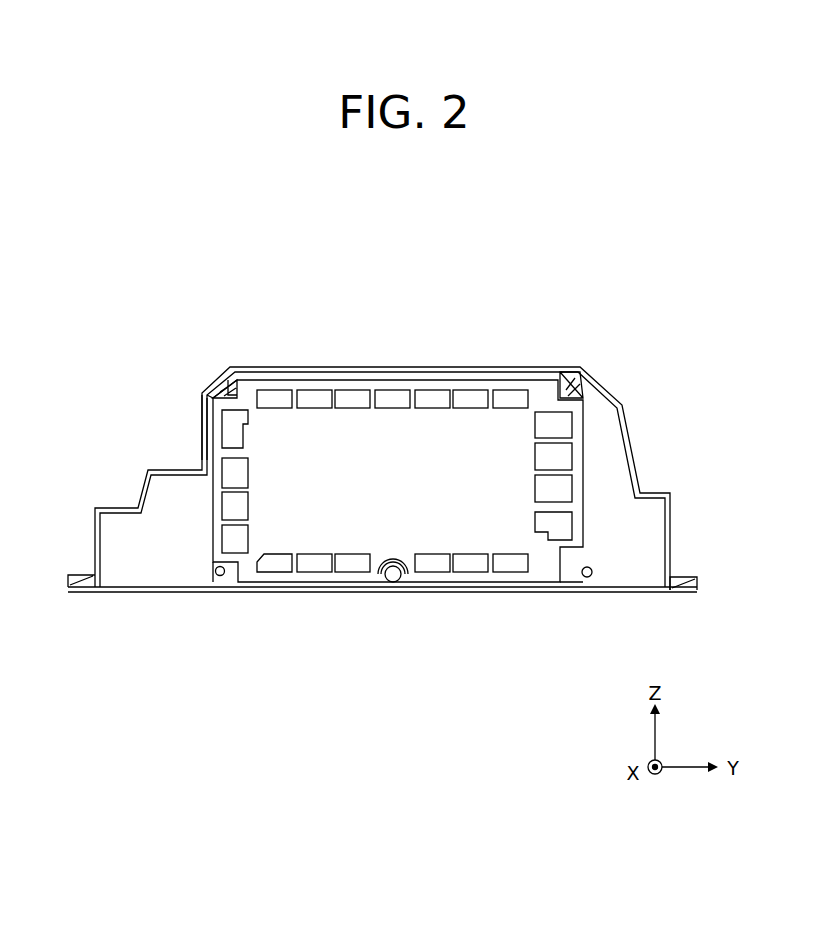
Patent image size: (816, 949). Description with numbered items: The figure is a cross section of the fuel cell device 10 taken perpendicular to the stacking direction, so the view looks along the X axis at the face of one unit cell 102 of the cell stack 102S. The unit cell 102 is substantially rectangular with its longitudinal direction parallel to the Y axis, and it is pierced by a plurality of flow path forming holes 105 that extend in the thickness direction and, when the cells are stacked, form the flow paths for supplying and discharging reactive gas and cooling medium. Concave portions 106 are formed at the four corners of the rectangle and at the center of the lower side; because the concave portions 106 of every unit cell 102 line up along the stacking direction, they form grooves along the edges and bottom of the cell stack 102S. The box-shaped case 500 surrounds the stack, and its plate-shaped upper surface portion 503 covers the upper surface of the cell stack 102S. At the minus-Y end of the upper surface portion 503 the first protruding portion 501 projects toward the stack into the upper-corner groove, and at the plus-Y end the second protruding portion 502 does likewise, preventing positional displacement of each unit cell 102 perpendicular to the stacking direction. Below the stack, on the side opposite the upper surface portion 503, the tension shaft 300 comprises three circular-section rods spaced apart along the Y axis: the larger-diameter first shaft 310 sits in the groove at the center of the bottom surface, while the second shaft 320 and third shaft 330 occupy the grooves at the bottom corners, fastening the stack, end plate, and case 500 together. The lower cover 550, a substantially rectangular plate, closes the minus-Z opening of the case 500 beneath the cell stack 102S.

The fuel cell device 10 is at (120, 386).
The case 500 is at (625, 408).
The first protruding portion 501 is at (217, 384).
The second protruding portion 502 is at (578, 375).
The upper surface portion 503 is at (203, 350).
The unit cell 102 is at (162, 488).
The cell stack 102S is at (207, 531).
The flow path forming holes 105 is at (553, 526).
The concave portions 106 is at (210, 403).
The tension shaft 300 is at (203, 650).
The first shaft 310 is at (392, 593).
The second shaft 320 is at (217, 597).
The third shaft 330 is at (587, 583).
The lower cover 550 is at (103, 593).